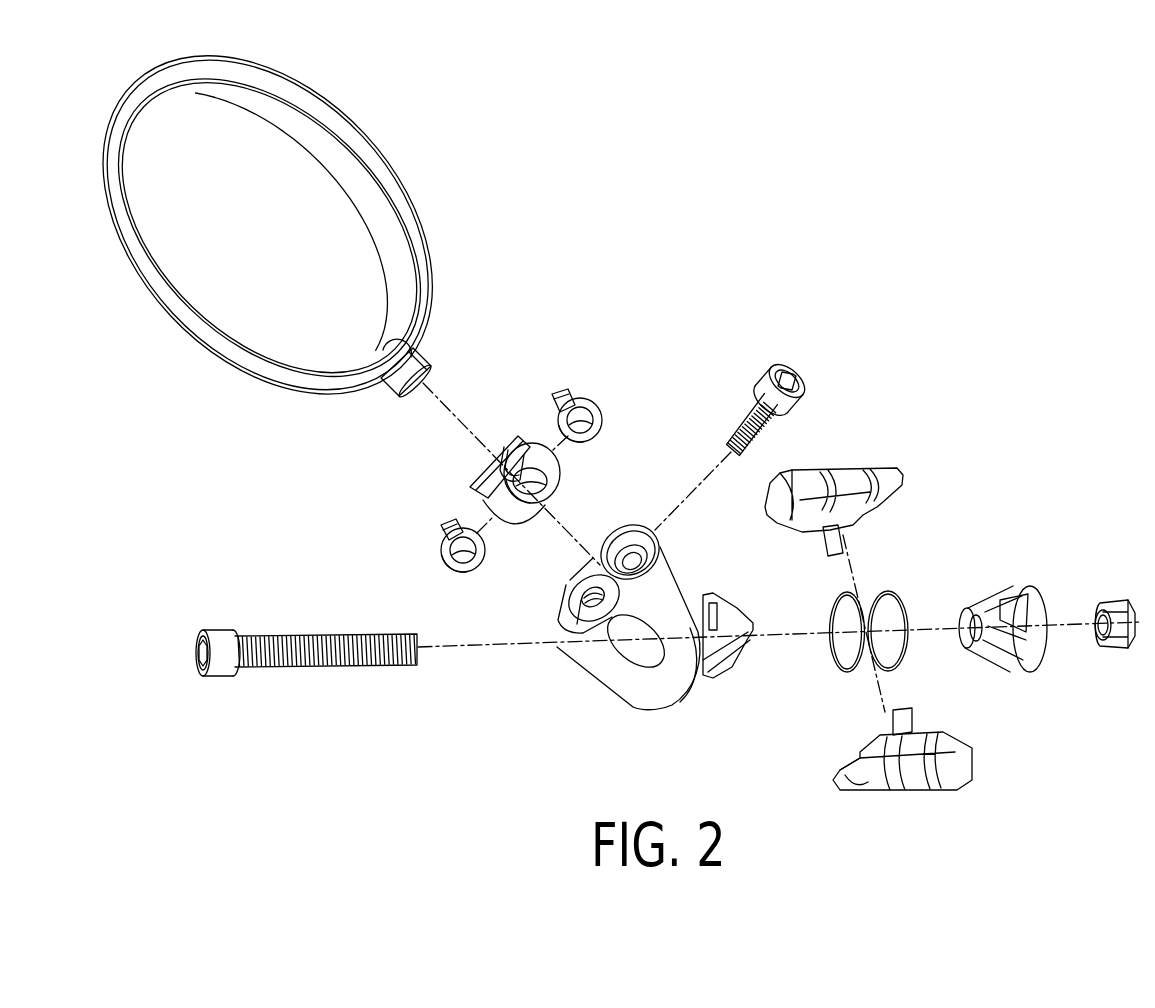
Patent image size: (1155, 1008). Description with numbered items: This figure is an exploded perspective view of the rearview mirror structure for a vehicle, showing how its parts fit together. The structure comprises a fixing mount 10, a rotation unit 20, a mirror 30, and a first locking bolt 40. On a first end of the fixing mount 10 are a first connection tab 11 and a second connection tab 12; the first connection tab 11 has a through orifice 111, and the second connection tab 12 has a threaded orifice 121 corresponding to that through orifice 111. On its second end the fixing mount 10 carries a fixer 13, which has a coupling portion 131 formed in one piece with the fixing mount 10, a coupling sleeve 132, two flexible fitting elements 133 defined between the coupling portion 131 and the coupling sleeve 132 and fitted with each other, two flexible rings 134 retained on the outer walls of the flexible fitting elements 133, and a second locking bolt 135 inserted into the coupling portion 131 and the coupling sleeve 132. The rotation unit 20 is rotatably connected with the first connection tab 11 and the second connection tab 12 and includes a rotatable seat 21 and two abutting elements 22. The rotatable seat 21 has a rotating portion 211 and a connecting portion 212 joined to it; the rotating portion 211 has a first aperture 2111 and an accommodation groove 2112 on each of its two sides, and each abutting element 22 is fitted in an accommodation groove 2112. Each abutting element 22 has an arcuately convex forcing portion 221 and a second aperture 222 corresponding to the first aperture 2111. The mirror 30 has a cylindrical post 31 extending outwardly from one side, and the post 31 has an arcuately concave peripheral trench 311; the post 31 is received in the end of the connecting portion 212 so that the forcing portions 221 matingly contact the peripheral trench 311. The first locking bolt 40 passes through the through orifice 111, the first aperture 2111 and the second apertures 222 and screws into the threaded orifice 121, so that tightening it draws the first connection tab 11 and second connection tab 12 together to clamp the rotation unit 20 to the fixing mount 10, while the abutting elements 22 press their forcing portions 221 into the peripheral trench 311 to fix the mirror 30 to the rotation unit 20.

The fixing mount 10 is at (644, 598).
The first connection tab 11 is at (678, 503).
The through orifice 111 is at (632, 563).
The second connection tab 12 is at (566, 587).
The threaded orifice 121 is at (594, 591).
The fixer 13 is at (950, 589).
The coupling portion 131 is at (733, 668).
The coupling sleeve 132 is at (1013, 590).
The flexible fitting element 133 is at (882, 473).
The flexible ring 134 is at (893, 590).
The second locking bolt 135 is at (312, 667).
The rotation unit 20 is at (500, 478).
The rotatable seat 21 is at (506, 478).
The rotating portion 211 is at (520, 520).
The connecting portion 212 is at (485, 477).
The first aperture 2111 is at (532, 485).
The accommodation groove 2112 is at (540, 478).
The abutting element 22 is at (521, 484).
The forcing portion 221 is at (441, 534).
The second aperture 222 is at (584, 422).
The mirror 30 is at (368, 128).
The post 31 is at (405, 368).
The peripheral trench 311 is at (400, 383).
The first locking bolt 40 is at (788, 363).